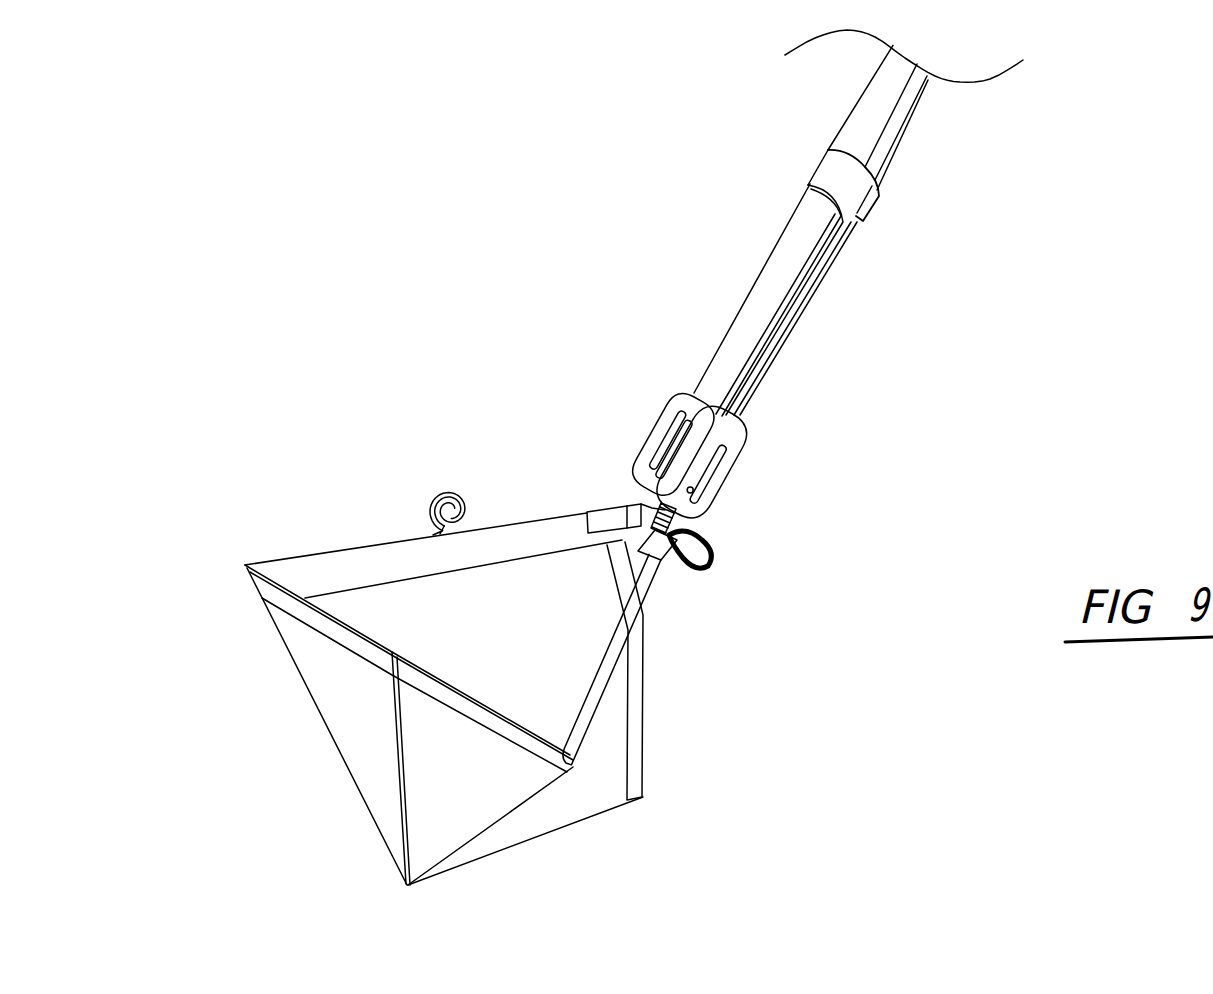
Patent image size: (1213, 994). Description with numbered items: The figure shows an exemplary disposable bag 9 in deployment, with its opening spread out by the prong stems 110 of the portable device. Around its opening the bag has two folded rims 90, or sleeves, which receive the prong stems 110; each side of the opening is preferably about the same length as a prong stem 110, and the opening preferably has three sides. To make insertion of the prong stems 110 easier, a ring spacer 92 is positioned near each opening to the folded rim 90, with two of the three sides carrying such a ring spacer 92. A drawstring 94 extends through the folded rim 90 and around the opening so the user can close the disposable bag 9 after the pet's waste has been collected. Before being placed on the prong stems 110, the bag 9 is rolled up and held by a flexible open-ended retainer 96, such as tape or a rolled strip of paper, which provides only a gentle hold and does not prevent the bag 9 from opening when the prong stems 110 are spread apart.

The disposable bag 9 is at (270, 800).
The folded rim 90 is at (307, 565).
The ring spacer 92 is at (598, 512).
The drawstring 94 is at (722, 568).
The flexible open-ended retainer 96 is at (447, 487).
The prong stem 110 is at (670, 588).